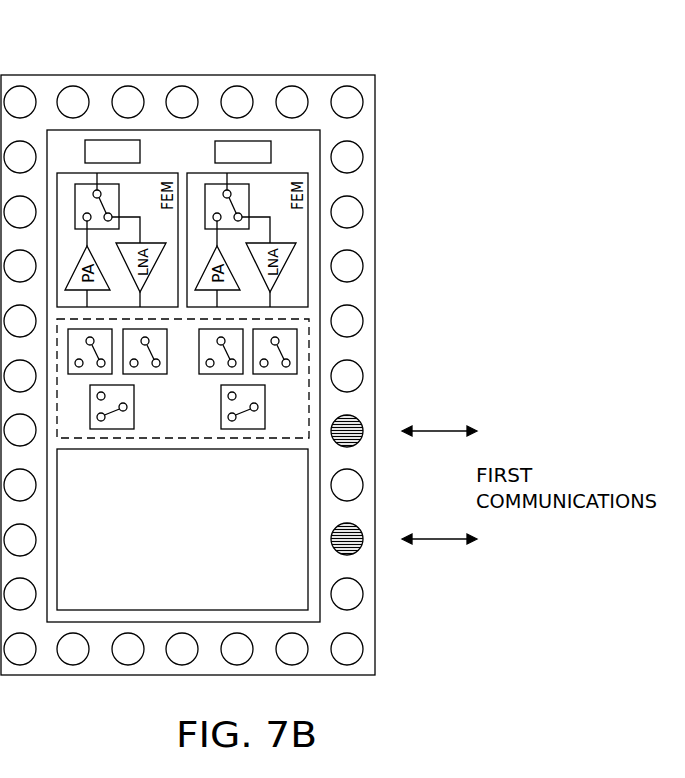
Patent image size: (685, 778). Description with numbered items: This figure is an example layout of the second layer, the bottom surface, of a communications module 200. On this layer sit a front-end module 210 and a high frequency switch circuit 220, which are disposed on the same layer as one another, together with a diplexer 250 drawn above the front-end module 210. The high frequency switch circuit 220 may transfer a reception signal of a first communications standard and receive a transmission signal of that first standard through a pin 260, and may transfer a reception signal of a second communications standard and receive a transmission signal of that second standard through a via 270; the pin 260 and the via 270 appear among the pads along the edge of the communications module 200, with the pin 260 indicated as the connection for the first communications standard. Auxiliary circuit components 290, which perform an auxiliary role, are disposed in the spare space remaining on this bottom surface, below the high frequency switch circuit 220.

The communications module 200 is at (343, 38).
The front-end module 210 is at (310, 238).
The high frequency switch circuit 220 is at (310, 348).
The diplexer 250 is at (271, 152).
The pin 260 is at (355, 536).
The via 270 is at (355, 485).
The auxiliary circuit components 290 is at (310, 567).